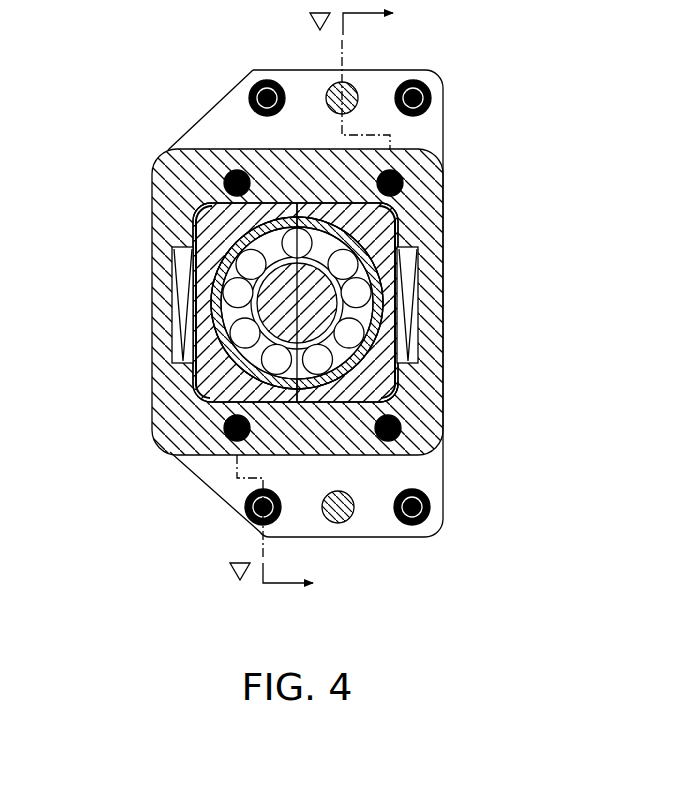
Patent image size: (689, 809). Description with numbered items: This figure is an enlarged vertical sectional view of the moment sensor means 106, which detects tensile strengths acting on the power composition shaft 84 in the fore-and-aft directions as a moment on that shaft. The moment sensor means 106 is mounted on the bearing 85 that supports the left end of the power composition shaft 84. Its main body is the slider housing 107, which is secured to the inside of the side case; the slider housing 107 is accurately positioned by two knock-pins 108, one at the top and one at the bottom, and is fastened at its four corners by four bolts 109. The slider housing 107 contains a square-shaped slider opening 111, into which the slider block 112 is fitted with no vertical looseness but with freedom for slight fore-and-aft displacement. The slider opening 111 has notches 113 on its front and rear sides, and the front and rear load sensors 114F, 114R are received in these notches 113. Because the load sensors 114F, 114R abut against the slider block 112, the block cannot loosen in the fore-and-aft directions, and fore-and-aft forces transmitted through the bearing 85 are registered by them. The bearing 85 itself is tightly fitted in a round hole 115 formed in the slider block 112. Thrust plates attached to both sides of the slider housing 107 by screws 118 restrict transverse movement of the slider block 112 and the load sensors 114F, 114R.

The power composition shaft 84 is at (190, 220).
The bearing 85 is at (167, 258).
The moment sensor means 106 is at (158, 88).
The slider housing 107 is at (226, 97).
The knock-pin 108 is at (355, 92).
The bolt 109 is at (265, 82).
The slider opening 111 is at (390, 212).
The slider block 112 is at (380, 237).
The notch 113 is at (173, 295).
The front load sensor 114F is at (175, 340).
The rear load sensor 114R is at (407, 337).
The round hole 115 is at (400, 370).
The screw 118 is at (210, 147).